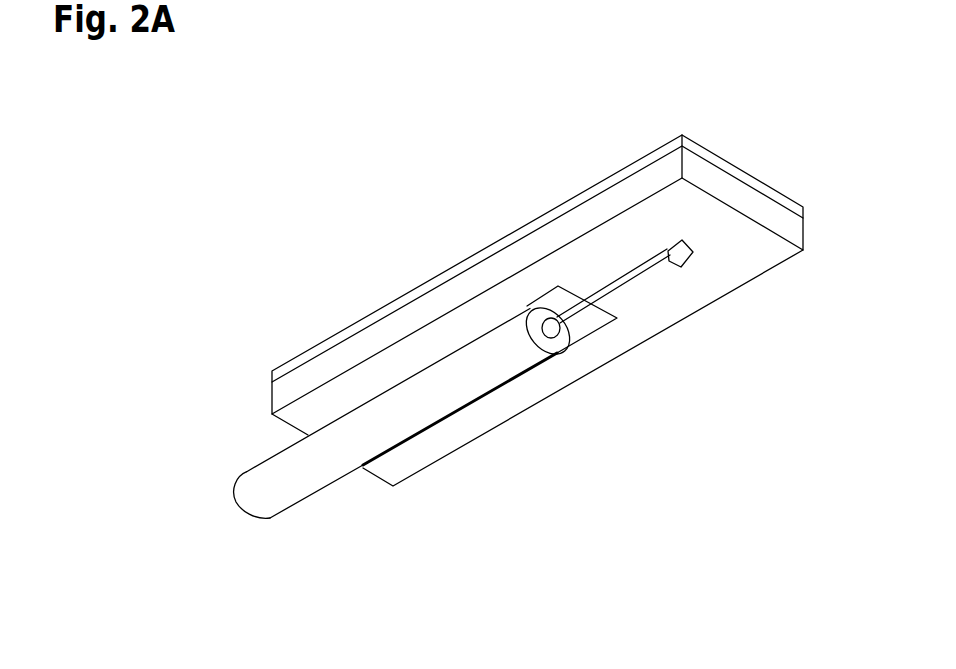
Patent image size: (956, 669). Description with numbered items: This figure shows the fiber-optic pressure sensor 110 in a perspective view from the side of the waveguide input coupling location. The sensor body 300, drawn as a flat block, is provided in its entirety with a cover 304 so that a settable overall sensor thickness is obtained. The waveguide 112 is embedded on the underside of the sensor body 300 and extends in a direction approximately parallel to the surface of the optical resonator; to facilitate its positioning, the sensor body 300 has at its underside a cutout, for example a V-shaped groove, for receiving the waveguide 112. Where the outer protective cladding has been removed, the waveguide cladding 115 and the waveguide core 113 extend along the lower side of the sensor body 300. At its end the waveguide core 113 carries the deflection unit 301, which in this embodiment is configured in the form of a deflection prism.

The fiber-optic pressure sensor 110 is at (404, 380).
The waveguide 112 is at (293, 488).
The waveguide core 113 is at (646, 266).
The waveguide cladding 115 is at (553, 330).
The sensor body 300 is at (544, 310).
The deflection unit 301 is at (686, 253).
The cover 304 is at (487, 247).